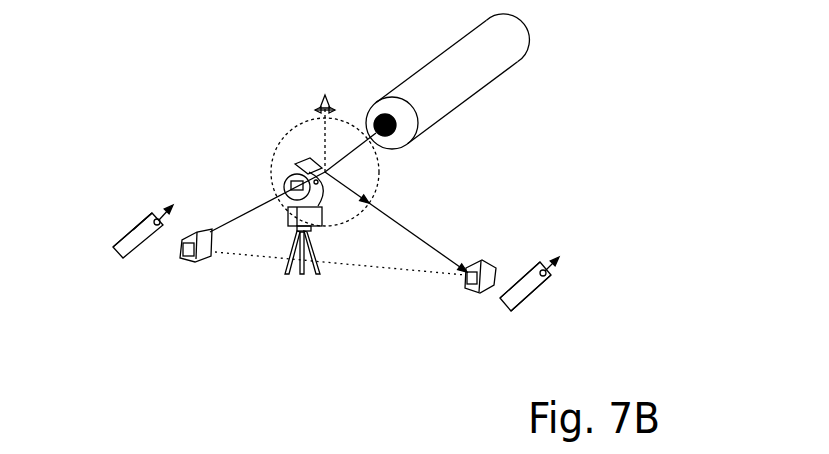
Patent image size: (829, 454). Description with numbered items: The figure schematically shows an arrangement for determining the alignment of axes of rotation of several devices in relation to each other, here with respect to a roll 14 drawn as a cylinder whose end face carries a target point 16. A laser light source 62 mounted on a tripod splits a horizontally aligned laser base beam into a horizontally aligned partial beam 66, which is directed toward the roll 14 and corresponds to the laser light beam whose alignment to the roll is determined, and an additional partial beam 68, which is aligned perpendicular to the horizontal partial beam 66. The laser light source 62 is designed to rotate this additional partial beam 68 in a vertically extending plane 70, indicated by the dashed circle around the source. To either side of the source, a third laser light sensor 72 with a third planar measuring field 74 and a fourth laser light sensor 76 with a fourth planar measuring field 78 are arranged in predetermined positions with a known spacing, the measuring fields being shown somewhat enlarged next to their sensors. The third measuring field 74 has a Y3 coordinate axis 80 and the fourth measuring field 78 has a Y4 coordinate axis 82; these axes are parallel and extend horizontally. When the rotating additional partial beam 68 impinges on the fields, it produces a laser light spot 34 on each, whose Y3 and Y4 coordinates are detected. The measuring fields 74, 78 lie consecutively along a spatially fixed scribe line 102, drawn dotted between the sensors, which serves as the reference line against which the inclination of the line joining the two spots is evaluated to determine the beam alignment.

The roll 14 is at (490, 66).
The target point 16 is at (405, 140).
The laser light spot 34 is at (159, 226).
The laser light source 62 is at (278, 213).
The horizontally aligned partial beam 66 is at (370, 137).
The additional partial beam 68 is at (310, 138).
The vertically extending plane 70 is at (368, 173).
The third laser light sensor 72 is at (525, 323).
The third planar measuring field 74 is at (514, 285).
The fourth laser light sensor 76 is at (145, 256).
The fourth planar measuring field 78 is at (122, 240).
The Y3 coordinate axis 80 is at (530, 292).
The Y4 coordinate axis 82 is at (138, 224).
The scribe line 102 is at (392, 267).